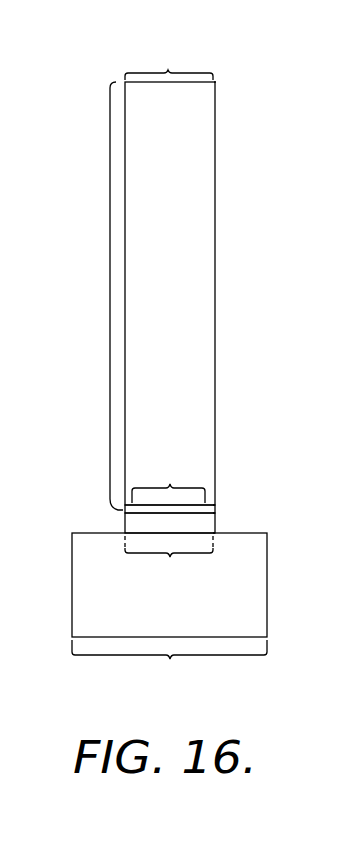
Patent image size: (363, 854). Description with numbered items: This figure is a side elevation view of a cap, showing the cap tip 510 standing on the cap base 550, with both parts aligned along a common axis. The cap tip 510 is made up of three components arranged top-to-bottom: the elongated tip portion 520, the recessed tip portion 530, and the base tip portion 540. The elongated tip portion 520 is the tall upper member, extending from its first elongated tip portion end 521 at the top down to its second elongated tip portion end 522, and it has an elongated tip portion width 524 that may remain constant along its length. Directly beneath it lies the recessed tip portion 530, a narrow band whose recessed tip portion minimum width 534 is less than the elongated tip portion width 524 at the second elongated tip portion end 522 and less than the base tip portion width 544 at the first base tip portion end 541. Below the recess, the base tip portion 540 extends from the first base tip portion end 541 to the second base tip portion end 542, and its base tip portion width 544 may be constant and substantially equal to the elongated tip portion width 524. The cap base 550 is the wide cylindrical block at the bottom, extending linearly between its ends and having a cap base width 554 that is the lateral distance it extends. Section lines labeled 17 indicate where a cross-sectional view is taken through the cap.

The section line 17- 17 is at (152, 32).
The cap tip 510 is at (215, 223).
The elongated tip portion 520 is at (110, 289).
The first elongated tip portion end 521 is at (224, 79).
The second elongated tip portion end 522 is at (220, 502).
The elongated tip portion width 524 is at (168, 71).
The recessed tip portion 530 is at (122, 510).
The recessed tip portion minimum width 534 is at (176, 472).
The base tip portion 540 is at (116, 514).
The first base tip portion end 541 is at (221, 512).
The second base tip portion end 542 is at (221, 532).
The base tip portion width 544 is at (170, 557).
The cap base 550 is at (260, 582).
The cap base width 554 is at (170, 659).